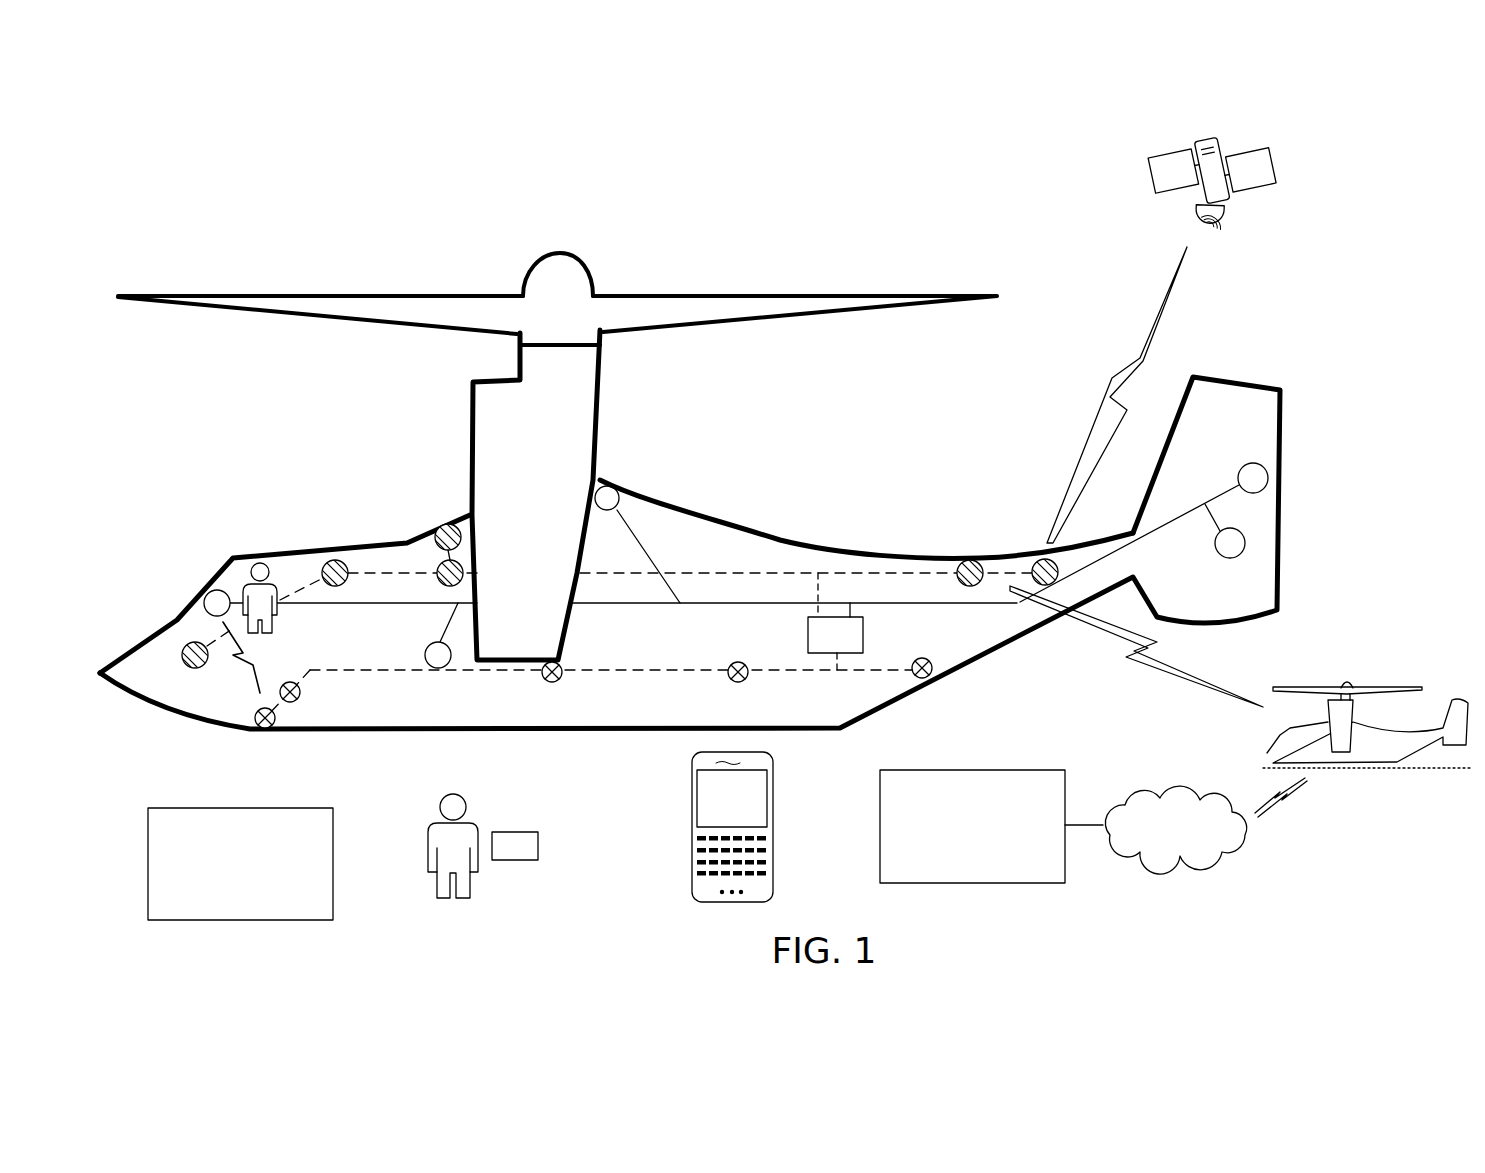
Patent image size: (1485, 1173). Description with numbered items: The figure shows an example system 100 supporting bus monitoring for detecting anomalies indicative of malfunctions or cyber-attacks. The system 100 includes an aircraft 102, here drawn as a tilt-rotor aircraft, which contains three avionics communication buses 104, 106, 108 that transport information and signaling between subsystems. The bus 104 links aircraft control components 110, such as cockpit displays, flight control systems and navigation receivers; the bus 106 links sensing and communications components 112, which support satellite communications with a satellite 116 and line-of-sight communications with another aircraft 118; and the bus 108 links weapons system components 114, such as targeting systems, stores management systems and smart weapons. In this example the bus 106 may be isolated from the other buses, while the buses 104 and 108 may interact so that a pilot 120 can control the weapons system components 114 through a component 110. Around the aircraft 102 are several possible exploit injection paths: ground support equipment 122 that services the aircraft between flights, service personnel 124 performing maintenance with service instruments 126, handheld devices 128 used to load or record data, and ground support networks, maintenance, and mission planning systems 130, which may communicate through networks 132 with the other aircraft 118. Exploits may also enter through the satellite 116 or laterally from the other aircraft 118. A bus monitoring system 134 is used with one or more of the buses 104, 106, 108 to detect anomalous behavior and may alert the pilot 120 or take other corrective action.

The system 100 is at (378, 226).
The aircraft 102 is at (700, 512).
The communication bus 104 is at (622, 609).
The communication bus 106 is at (860, 571).
The communication bus 108 is at (768, 667).
The aircraft control components 110 is at (422, 653).
The sensing and communications components 112 is at (967, 591).
The weapons system components 114 is at (566, 677).
The satellite 116 is at (1206, 131).
The other aircraft 118 is at (1398, 767).
The pilot 120 is at (238, 582).
The ground support equipment 122 is at (243, 804).
The service personnel 124 is at (449, 789).
The service instruments 126 is at (514, 827).
The handheld devices 128 is at (686, 852).
The ground support networks, maintenance, and mission planning systems 130 is at (969, 766).
The networks 132 is at (1176, 792).
The bus monitoring system 134 is at (835, 622).